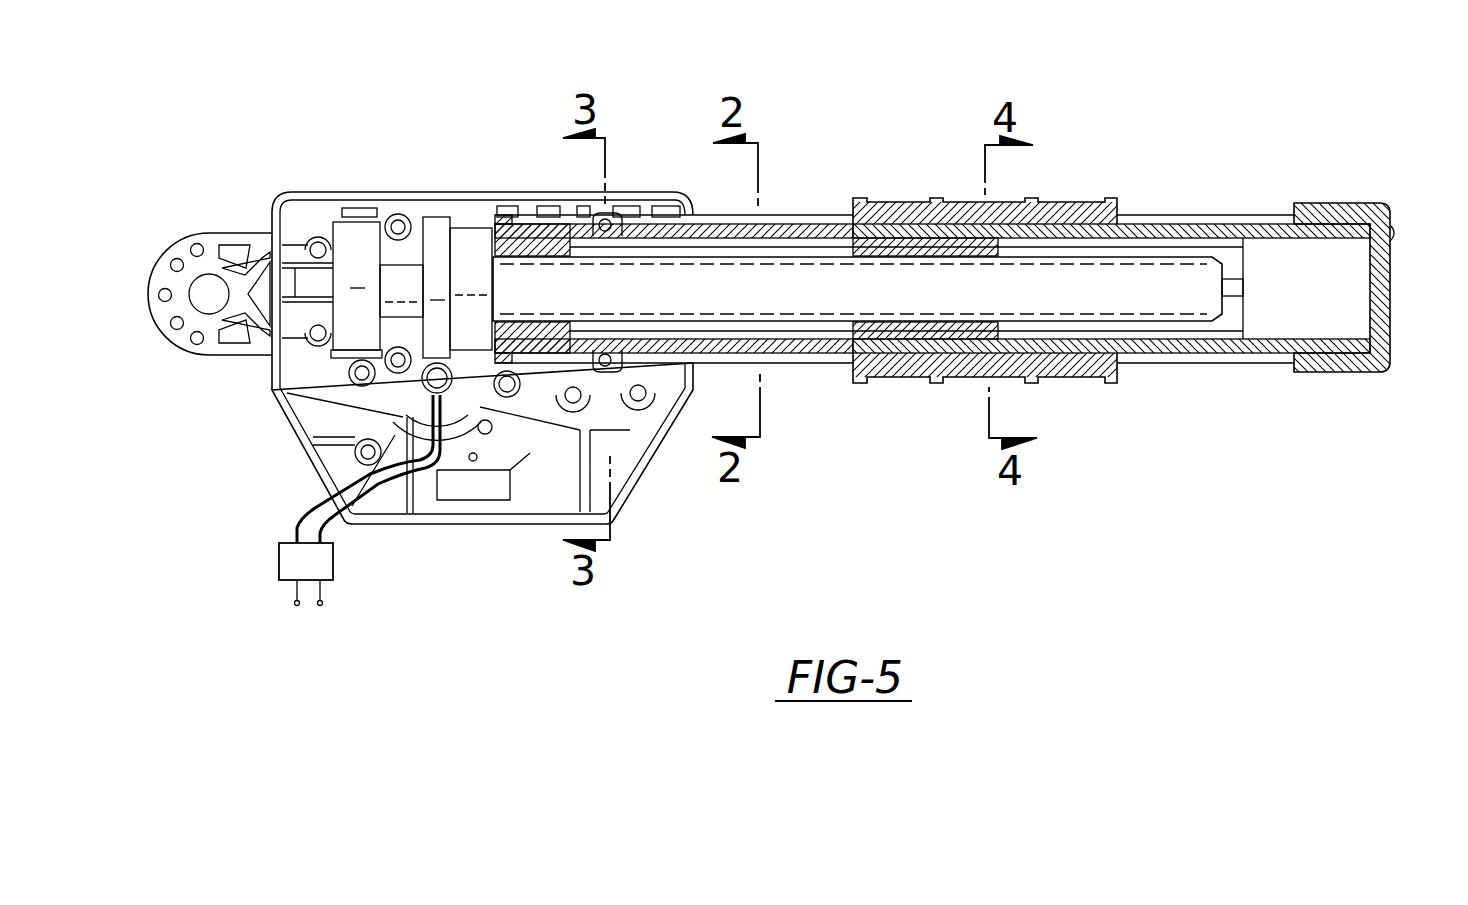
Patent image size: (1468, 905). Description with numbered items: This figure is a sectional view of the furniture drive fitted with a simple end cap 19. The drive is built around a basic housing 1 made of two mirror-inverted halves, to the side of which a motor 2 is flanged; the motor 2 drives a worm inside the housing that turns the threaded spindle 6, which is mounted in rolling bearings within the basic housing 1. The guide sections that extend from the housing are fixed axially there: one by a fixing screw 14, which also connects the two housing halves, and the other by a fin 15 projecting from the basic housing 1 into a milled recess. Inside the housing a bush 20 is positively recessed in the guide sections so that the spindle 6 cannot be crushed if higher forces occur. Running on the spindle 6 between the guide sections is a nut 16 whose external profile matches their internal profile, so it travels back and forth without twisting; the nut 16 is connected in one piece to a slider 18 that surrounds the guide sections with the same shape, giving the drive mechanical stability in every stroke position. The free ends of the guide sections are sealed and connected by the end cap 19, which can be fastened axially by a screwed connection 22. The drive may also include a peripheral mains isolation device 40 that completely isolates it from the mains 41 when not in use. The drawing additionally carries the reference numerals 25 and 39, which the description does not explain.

The basic housing 1 is at (437, 517).
The motor 2 is at (423, 398).
The spindle 6 is at (1150, 318).
The fixing screw 14 is at (603, 223).
The fin 15 is at (617, 372).
The nut 16 is at (913, 227).
The slider 18 is at (1090, 217).
The end cap 19 is at (1333, 203).
The bush 20 is at (520, 237).
The screwed connection 22 is at (1393, 230).
The mounting flange 25 is at (227, 235).
The housing cover 39 is at (418, 165).
The mains isolation device 40 is at (335, 565).
The mains 41 is at (322, 605).